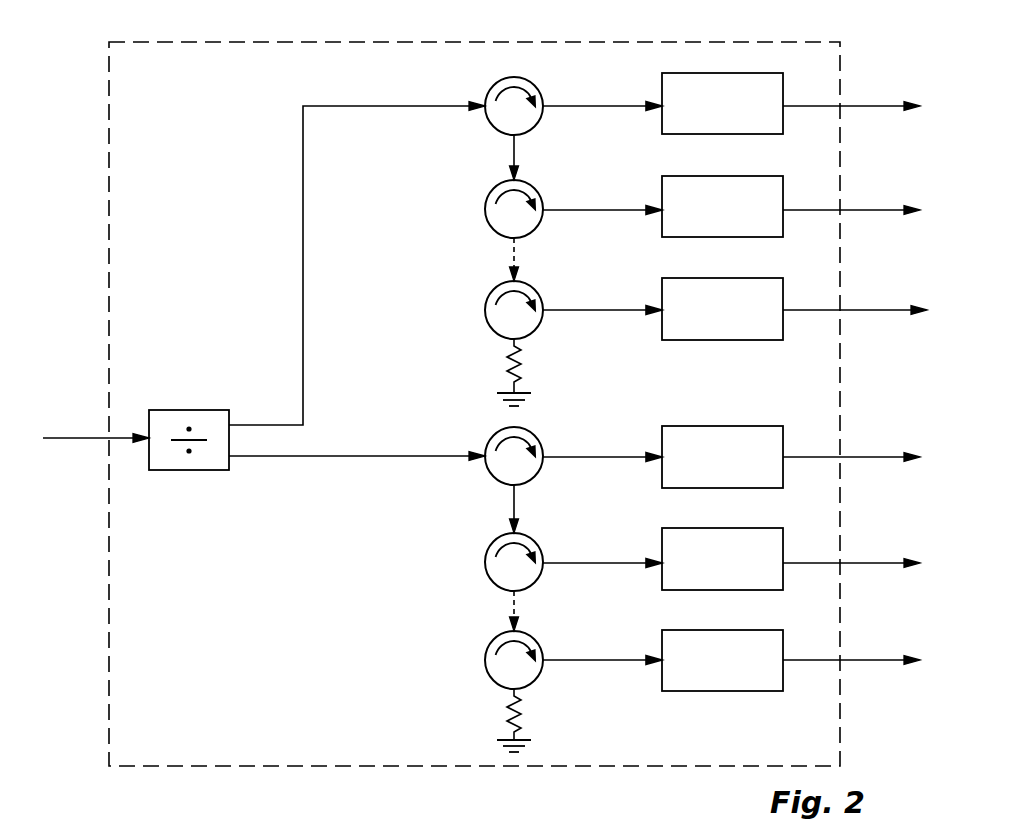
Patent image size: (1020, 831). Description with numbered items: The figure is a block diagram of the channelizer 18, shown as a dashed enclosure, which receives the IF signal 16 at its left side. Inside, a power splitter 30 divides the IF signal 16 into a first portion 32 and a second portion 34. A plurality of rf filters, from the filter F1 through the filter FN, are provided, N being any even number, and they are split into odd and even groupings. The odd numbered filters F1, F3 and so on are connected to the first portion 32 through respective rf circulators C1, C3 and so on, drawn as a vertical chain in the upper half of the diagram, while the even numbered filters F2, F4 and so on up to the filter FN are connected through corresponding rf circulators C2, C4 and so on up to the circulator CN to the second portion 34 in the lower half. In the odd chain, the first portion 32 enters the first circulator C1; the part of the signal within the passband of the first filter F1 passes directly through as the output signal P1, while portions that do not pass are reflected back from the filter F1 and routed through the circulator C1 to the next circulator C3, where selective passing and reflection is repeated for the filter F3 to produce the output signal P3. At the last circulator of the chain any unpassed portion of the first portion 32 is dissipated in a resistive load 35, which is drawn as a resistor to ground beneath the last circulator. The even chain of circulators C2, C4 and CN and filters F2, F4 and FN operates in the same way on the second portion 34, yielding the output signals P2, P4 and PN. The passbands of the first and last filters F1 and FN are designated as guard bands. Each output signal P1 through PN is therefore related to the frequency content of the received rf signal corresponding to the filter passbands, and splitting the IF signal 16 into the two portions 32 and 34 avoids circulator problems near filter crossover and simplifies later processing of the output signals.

The IF signal 16 is at (80, 437).
The channelizer 18 is at (841, 60).
The power splitter 30 is at (200, 410).
The IF signal first portion 32 is at (303, 262).
The IF signal second portion 34 is at (362, 456).
The resistive load 35 is at (524, 377).
The first circulator C1 is at (535, 80).
The rf circulator C2 is at (537, 431).
The rf circulator C3 is at (535, 183).
The rf circulator C4 is at (537, 538).
The rf circulator CN is at (537, 636).
The first filter F1 is at (758, 74).
The rf filter F2 is at (750, 426).
The rf filter F3 is at (758, 177).
The rf filter F4 is at (750, 528).
The last filter FN is at (750, 630).
The output signal P1 is at (857, 107).
The output signal P2 is at (853, 458).
The output signal P3 is at (857, 211).
The output signal P4 is at (853, 563).
The output signal PN is at (848, 660).